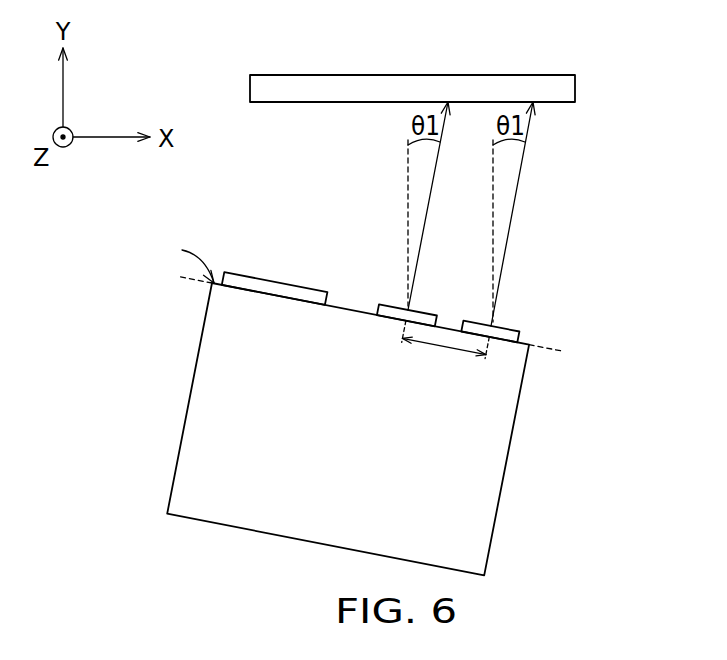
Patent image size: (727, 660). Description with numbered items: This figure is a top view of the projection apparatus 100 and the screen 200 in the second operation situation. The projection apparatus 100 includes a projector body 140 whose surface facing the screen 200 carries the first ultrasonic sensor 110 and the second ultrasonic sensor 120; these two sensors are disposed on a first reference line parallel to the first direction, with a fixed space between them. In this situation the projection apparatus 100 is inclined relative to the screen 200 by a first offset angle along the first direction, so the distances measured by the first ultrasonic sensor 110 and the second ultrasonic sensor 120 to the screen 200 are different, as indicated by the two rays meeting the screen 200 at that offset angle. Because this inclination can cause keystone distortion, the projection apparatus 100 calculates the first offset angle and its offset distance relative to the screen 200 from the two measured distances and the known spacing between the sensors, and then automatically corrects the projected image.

The projection apparatus 100 is at (404, 406).
The first ultrasonic sensor 110 is at (472, 320).
The second ultrasonic sensor 120 is at (390, 303).
The projector body 140 is at (478, 502).
The screen 200 is at (550, 91).